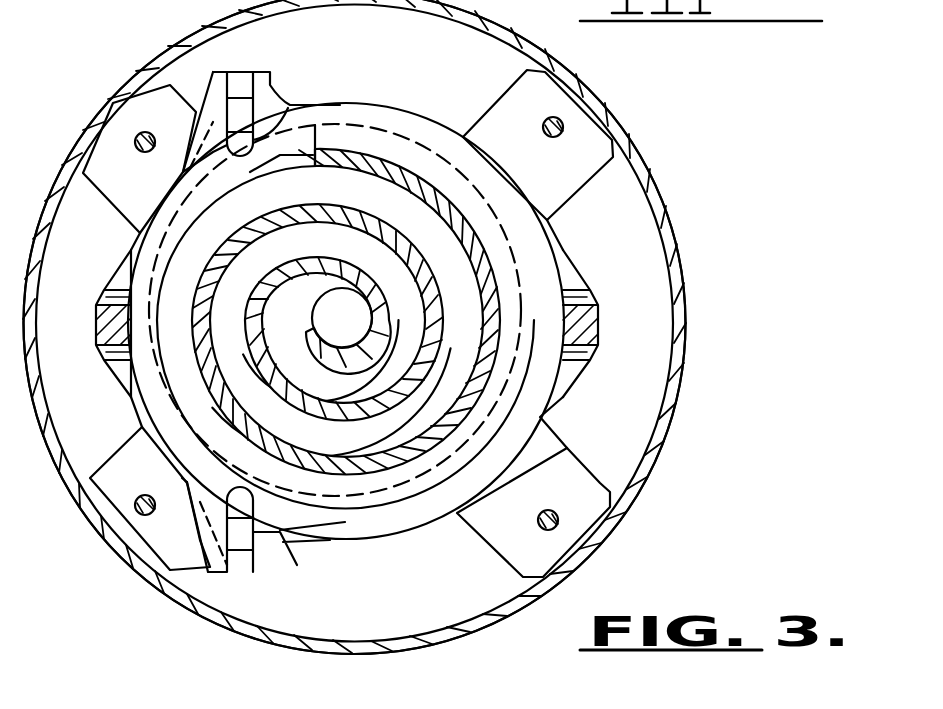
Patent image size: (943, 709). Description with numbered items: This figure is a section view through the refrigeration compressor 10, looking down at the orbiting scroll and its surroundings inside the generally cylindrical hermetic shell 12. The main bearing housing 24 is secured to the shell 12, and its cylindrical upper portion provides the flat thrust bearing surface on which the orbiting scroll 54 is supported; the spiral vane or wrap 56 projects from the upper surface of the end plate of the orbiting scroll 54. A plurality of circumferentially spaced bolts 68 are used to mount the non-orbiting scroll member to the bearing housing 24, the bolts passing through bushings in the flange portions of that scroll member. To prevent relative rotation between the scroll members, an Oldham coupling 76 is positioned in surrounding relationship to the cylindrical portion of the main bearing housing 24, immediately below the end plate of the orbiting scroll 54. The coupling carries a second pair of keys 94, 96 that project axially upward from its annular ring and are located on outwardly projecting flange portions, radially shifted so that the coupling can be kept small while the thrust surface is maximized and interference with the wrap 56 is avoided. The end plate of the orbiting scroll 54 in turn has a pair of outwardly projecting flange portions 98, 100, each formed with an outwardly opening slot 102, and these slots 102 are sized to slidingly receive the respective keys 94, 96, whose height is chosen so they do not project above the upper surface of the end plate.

The compressor 10 is at (706, 152).
The hermetic shell 12 is at (690, 323).
The main bearing housing 24 is at (557, 93).
The orbiting scroll 54 is at (550, 246).
The spiral vane or wrap 56 is at (218, 257).
The bolts 68 is at (565, 125).
The Oldham coupling 76 is at (577, 380).
The key 94 is at (262, 546).
The key 96 is at (247, 113).
The flange portion 98 is at (205, 572).
The flange portion 100 is at (213, 78).
The slot 102 is at (235, 572).